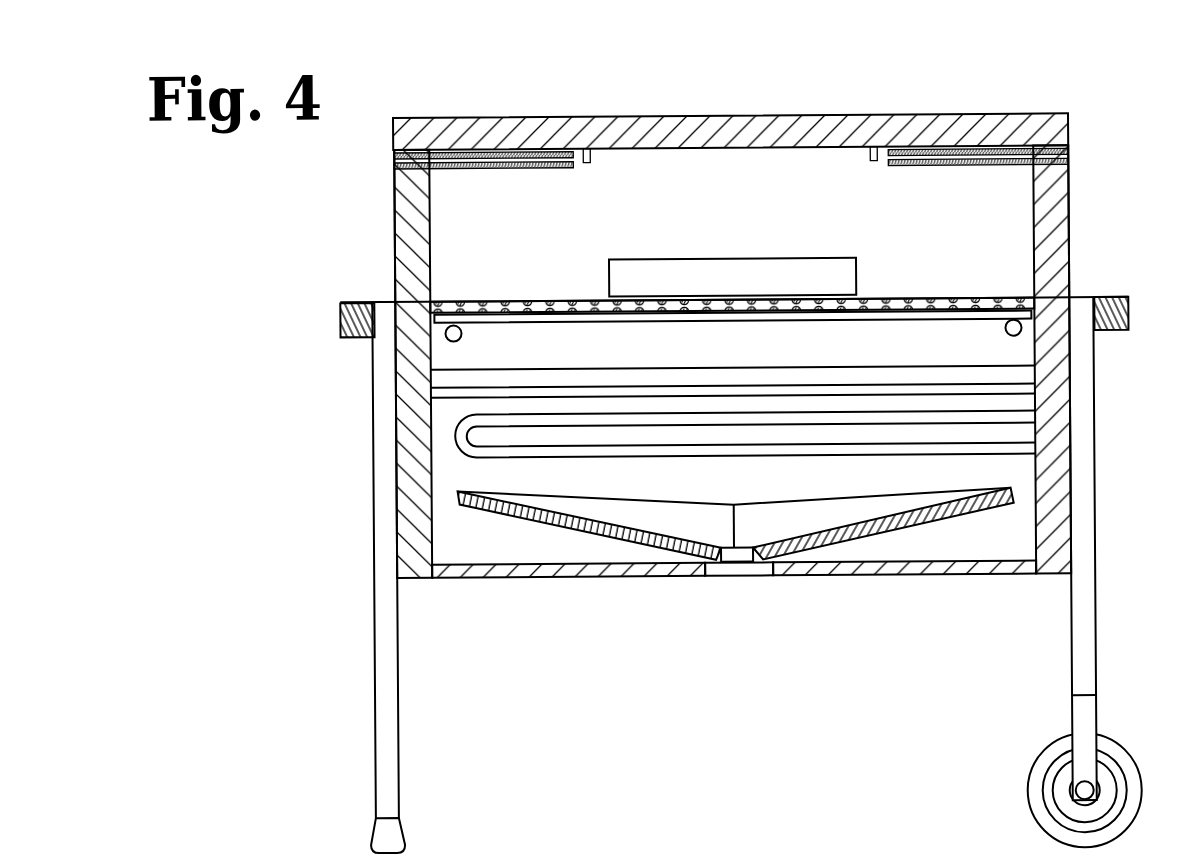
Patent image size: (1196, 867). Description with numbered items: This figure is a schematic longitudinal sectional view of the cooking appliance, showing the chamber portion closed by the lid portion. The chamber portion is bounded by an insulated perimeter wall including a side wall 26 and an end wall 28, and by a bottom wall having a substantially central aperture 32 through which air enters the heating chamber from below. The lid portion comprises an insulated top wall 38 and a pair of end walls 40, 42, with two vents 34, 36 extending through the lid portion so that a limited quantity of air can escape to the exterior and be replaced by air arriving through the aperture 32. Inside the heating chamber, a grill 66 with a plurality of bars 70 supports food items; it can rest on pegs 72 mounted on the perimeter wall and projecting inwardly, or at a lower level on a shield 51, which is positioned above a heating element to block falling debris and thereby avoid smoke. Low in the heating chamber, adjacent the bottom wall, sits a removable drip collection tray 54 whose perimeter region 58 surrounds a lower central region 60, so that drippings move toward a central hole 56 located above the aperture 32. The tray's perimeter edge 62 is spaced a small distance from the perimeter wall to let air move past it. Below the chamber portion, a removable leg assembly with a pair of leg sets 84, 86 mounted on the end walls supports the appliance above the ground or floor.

The side wall 26 is at (405, 494).
The end wall 28 is at (1053, 450).
The aperture 32 is at (730, 580).
The vent 34 is at (394, 157).
The vent 36 is at (1068, 160).
The top wall 38 is at (712, 125).
The end wall 40 is at (410, 212).
The end wall 42 is at (1055, 237).
The shield 51 is at (440, 372).
The drip collection tray 54 is at (735, 555).
The central hole 56 is at (737, 539).
The perimeter region 58 is at (549, 508).
The central region 60 is at (655, 535).
The perimeter edge 62 is at (455, 491).
The grill 66 is at (553, 304).
The bars 70 is at (866, 303).
The pegs 72 is at (462, 340).
The leg set 84 is at (384, 742).
The leg set 86 is at (1079, 711).